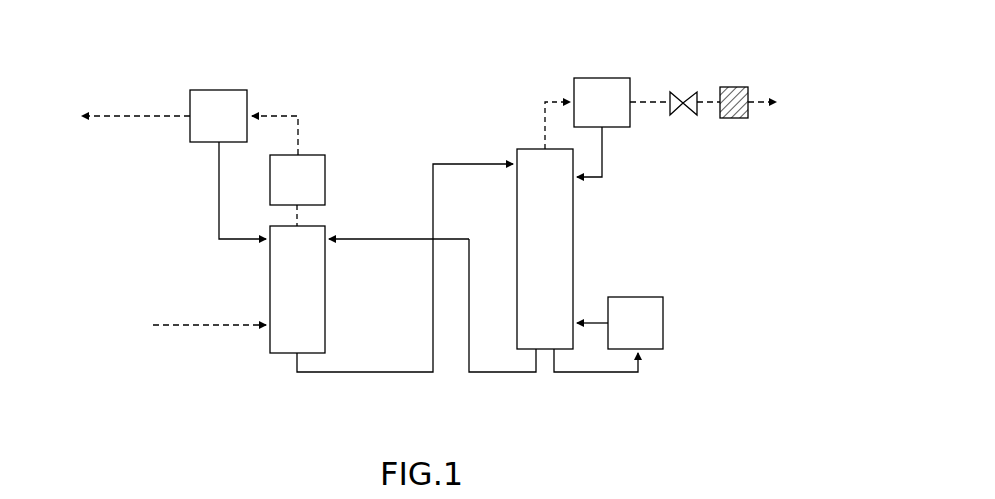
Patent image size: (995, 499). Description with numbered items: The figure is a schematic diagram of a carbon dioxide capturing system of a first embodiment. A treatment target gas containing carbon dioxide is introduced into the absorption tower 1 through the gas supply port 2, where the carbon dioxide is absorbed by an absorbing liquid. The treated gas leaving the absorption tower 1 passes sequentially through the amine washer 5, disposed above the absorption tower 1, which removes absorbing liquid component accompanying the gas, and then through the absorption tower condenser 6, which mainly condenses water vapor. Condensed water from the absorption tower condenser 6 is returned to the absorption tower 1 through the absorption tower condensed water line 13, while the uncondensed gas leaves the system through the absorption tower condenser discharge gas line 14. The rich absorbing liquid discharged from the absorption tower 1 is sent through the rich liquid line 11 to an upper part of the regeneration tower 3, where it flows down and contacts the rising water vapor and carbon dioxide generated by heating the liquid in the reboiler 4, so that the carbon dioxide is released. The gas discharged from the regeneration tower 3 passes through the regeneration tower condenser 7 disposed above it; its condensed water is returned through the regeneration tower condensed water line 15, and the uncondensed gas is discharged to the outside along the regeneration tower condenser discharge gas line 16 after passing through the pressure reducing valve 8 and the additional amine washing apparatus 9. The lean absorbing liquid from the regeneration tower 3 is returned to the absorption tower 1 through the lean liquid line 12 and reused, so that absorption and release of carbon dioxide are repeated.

The absorption tower 1 is at (285, 355).
The gas supply port 2 is at (190, 327).
The regeneration tower 3 is at (518, 148).
The reboiler 4 is at (647, 296).
The amine washer 5 is at (325, 178).
The absorption tower condenser 6 is at (231, 88).
The regeneration tower condenser 7 is at (597, 78).
The pressure reducing valve 8 is at (683, 90).
The additional amine washing apparatus 9 is at (736, 86).
The rich liquid line 11 is at (378, 374).
The lean liquid line 12 is at (507, 374).
The absorption tower condensed water line 13 is at (219, 200).
The absorption tower condenser discharge gas line 14 is at (128, 112).
The regeneration tower condensed water line 15 is at (600, 178).
The regeneration tower condenser discharge gas line 16 is at (654, 100).